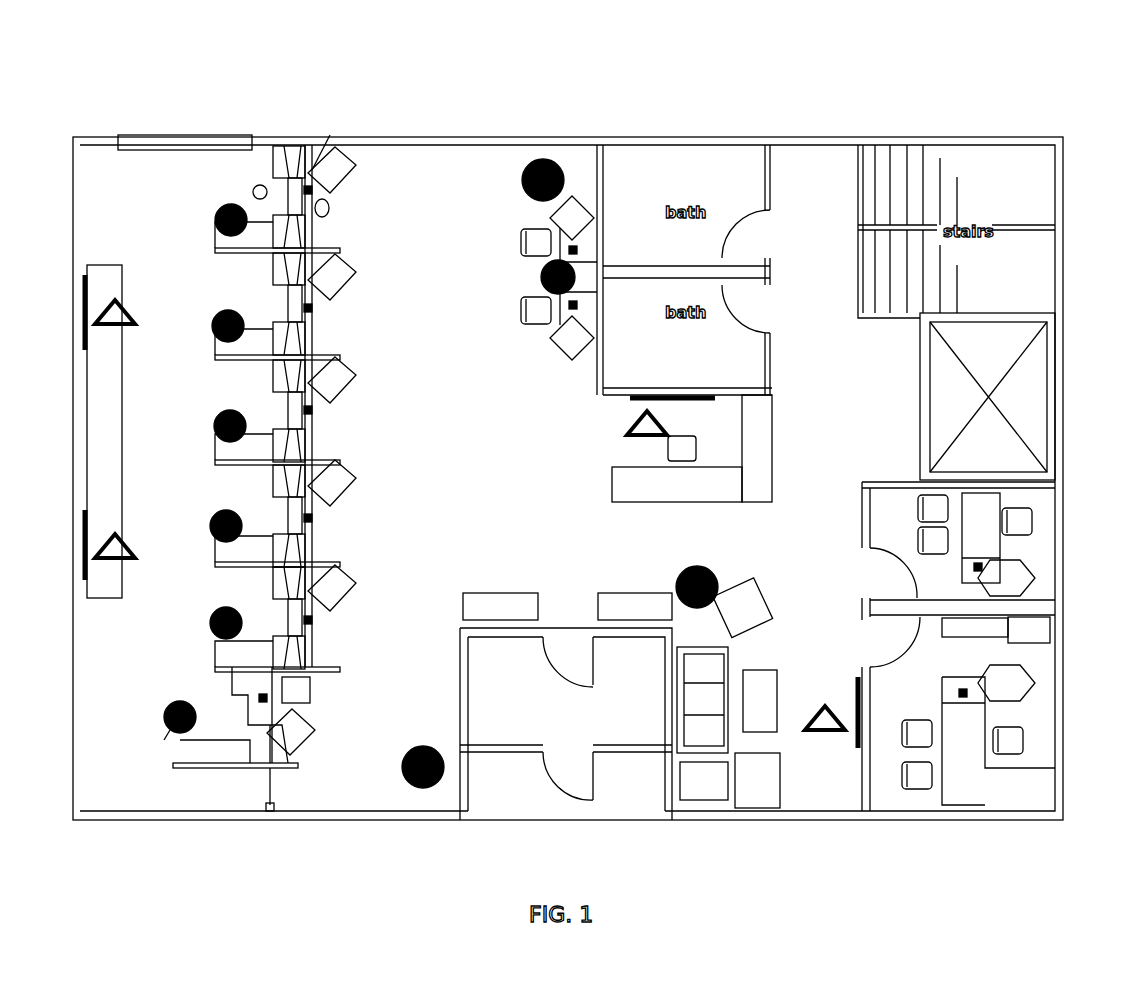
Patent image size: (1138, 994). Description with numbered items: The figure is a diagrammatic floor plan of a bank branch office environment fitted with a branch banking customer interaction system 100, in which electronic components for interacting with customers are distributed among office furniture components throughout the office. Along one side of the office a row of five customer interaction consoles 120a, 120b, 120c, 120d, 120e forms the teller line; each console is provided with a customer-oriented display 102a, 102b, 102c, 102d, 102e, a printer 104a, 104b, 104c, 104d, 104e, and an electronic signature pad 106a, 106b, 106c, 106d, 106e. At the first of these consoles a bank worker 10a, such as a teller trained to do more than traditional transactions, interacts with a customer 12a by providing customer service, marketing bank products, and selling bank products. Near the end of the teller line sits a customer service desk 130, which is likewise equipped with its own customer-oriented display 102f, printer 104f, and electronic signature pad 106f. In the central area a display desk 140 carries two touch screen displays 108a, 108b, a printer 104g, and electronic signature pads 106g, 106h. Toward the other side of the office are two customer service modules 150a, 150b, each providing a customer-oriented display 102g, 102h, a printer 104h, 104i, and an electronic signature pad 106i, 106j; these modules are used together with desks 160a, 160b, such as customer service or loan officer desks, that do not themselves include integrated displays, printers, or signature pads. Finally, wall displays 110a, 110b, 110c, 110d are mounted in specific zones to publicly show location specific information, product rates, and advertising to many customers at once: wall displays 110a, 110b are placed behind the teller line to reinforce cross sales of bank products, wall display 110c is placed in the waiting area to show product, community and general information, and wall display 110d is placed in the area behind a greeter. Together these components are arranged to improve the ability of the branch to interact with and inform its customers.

The branch banking customer interaction system 100 is at (580, 62).
The bank worker 10a is at (255, 186).
The customer 12a is at (330, 210).
The customer-oriented display 102a is at (350, 158).
The customer-oriented display 102b is at (345, 272).
The customer-oriented display 102c is at (345, 376).
The customer-oriented display 102d is at (345, 480).
The customer-oriented display 102e is at (345, 583).
The customer-oriented display 102f is at (300, 742).
The customer-oriented display 102g is at (1022, 578).
The customer-oriented display 102h is at (1015, 683).
The printer 104a is at (216, 212).
The printer 104b is at (214, 318).
The printer 104c is at (216, 418).
The printer 104d is at (212, 518).
The printer 104e is at (212, 615).
The printer 104f is at (170, 702).
The printer 104g is at (540, 278).
The printer 104h is at (980, 580).
The printer 104i is at (965, 680).
The electronic signature pad 106a is at (313, 190).
The electronic signature pad 106b is at (313, 308).
The electronic signature pad 106c is at (313, 410).
The electronic signature pad 106d is at (313, 518).
The electronic signature pad 106e is at (313, 620).
The electronic signature pad 106f is at (285, 698).
The electronic signature pad 106g is at (578, 250).
The electronic signature pad 106h is at (578, 308).
The electronic signature pad 106i is at (978, 562).
The electronic signature pad 106j is at (963, 700).
The touch screen display 108a is at (560, 208).
The touch screen display 108b is at (556, 348).
The wall display 110a is at (95, 290).
The wall display 110b is at (96, 552).
The wall display 110c is at (855, 690).
The wall display 110d is at (705, 402).
The customer interaction console 120a is at (342, 230).
The customer interaction console 120b is at (350, 332).
The customer interaction console 120c is at (350, 437).
The customer interaction console 120d is at (342, 545).
The customer interaction console 120e is at (338, 650).
The customer service desk 130 is at (330, 720).
The display desk 140 is at (512, 293).
The customer service module 150a is at (945, 568).
The customer service module 150b is at (928, 680).
The desk 160a is at (905, 520).
The desk 160b is at (905, 748).